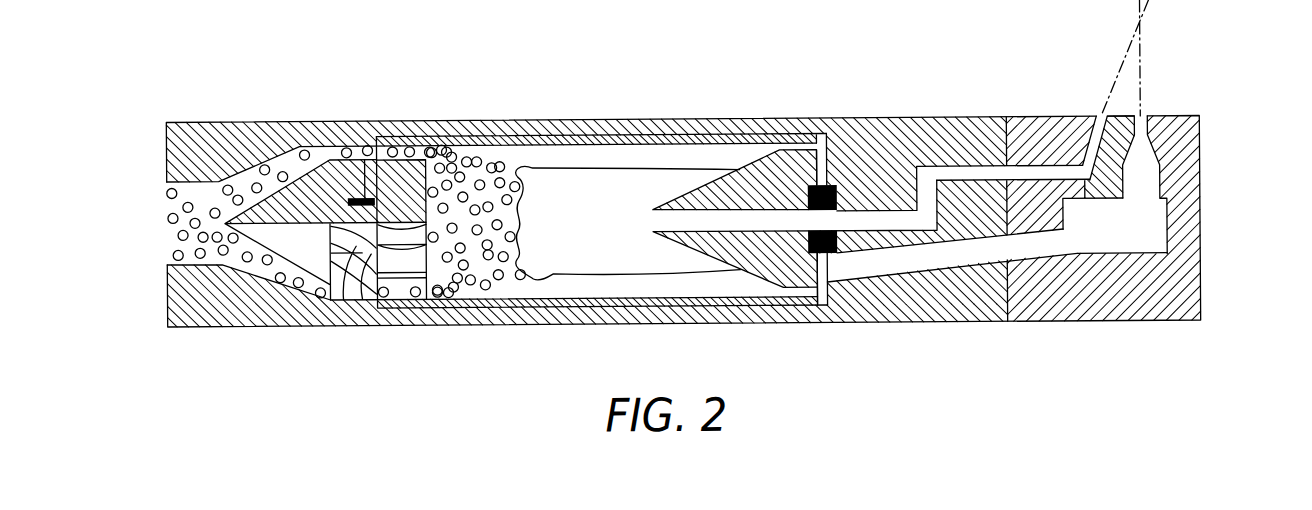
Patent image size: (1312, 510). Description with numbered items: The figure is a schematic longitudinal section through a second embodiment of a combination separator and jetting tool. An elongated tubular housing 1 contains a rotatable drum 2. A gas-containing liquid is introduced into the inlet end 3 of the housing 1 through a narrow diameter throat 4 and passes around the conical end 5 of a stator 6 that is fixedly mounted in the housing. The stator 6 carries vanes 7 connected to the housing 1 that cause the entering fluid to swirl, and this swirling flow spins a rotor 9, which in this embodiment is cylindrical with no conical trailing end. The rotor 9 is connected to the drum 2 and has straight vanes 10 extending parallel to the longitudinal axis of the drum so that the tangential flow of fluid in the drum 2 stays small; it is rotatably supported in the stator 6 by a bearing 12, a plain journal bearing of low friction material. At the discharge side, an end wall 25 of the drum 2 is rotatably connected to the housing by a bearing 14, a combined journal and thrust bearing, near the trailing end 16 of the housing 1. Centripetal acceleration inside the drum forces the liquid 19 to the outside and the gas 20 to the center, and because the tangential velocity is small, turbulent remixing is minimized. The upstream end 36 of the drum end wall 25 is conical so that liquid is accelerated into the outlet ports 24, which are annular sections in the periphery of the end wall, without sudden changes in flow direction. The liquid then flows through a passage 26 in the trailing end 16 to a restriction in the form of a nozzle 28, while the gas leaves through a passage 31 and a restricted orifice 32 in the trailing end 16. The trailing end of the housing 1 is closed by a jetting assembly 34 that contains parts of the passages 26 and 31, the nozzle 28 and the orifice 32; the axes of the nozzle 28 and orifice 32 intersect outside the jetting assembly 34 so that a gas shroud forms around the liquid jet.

The tubular housing 1 is at (507, 119).
The drum 2 is at (648, 160).
The inlet end 3 is at (165, 158).
The throat 4 is at (190, 254).
The conical end 5 is at (292, 240).
The stator 6 is at (318, 148).
The vanes 7 is at (372, 260).
The rotor 9 is at (428, 146).
The straight vanes 10 is at (415, 260).
The bearing 12 is at (352, 148).
The bearing 14 is at (838, 187).
The trailing end 16 is at (960, 165).
The liquid 19 is at (585, 142).
The gas 20 is at (600, 232).
The ports 24 is at (815, 144).
The end wall 25 is at (790, 150).
The passage 26 is at (915, 270).
The nozzle 28 is at (1200, 120).
The passage 31 is at (972, 187).
The orifice 32 is at (1097, 118).
The jetting assembly 34 is at (1113, 325).
The upstream end 36 is at (742, 258).